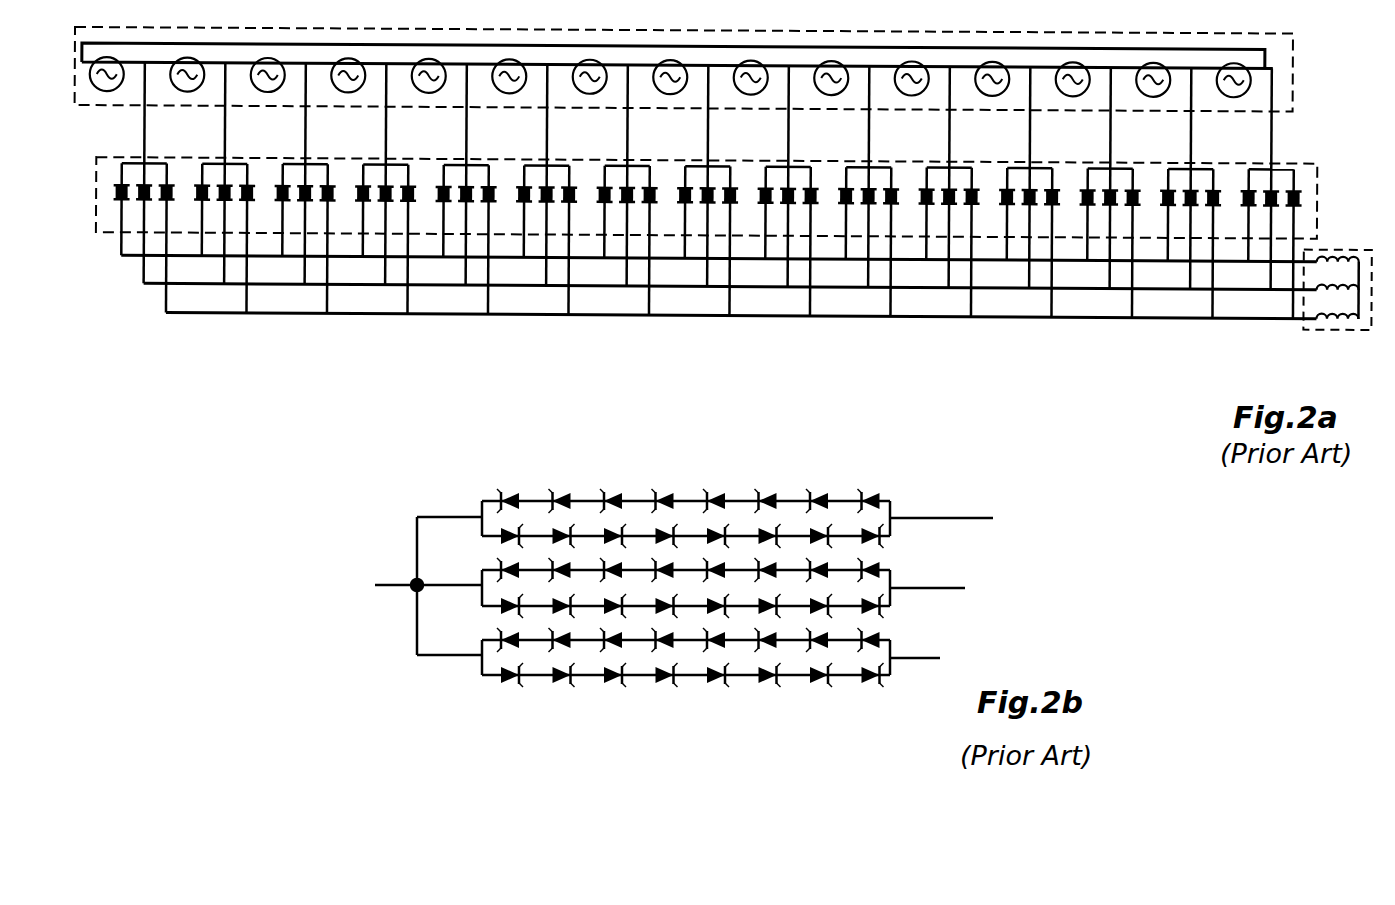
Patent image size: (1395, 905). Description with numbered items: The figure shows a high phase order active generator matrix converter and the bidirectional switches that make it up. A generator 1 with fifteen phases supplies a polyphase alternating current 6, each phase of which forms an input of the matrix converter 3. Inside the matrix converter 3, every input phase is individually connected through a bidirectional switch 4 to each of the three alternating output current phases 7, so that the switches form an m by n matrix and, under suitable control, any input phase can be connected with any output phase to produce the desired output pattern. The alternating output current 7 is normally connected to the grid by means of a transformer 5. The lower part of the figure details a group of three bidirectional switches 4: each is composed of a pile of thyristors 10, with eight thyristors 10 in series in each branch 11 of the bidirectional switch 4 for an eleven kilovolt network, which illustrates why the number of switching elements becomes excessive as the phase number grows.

In FIG. 2a, the generator 1 is at (1295, 48).
In FIG. 2a, the matrix converter 3 is at (1322, 190).
In FIG. 2a, the bidirectional switch 4 is at (117, 192).
In FIG. 2b, the bidirectional switch 4 is at (682, 591).
In FIG. 2a, the transformer 5 is at (1306, 323).
In FIG. 2a, the polyphase alternating current 6 is at (148, 131).
In FIG. 2a, the alternating output current phases 7 is at (175, 258).
In FIG. 2b, the thyristors 10 is at (855, 493).
In FIG. 2b, the branch 11 is at (482, 529).